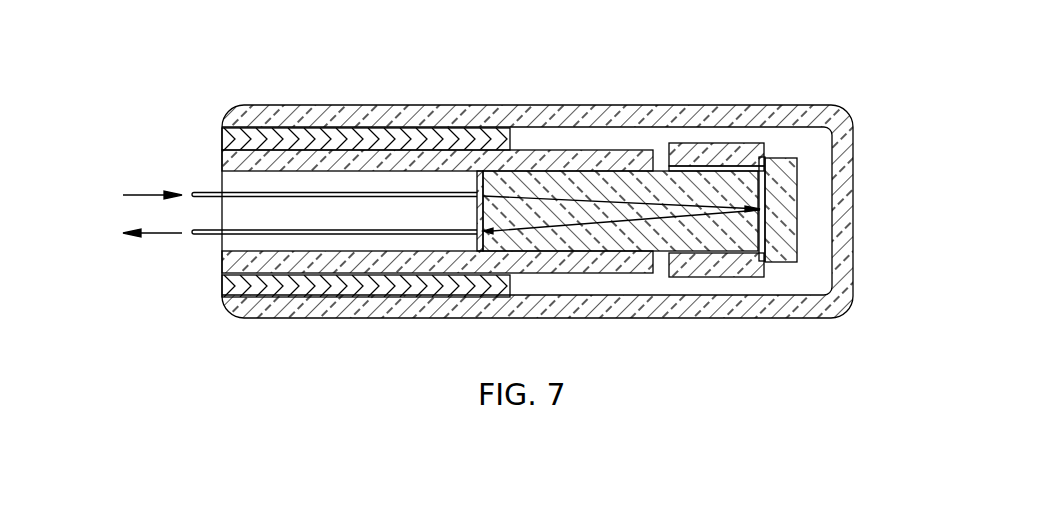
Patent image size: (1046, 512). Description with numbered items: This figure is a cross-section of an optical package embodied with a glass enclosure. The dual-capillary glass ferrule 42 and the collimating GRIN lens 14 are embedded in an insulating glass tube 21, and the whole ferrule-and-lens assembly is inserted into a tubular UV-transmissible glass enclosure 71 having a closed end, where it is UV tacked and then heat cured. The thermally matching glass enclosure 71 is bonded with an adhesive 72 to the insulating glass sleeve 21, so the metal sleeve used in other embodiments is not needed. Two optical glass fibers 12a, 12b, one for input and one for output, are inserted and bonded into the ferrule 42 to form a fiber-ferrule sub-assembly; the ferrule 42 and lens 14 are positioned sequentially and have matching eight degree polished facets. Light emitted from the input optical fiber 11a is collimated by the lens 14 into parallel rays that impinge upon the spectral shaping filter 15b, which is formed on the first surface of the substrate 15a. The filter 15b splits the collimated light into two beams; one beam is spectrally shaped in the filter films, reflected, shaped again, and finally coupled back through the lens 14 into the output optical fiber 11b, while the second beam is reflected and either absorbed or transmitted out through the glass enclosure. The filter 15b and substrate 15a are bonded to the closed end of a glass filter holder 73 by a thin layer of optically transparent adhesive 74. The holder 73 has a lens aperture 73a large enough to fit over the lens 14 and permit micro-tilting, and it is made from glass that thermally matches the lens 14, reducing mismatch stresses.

The input optical fiber 11a is at (142, 192).
The output optical fiber 11b is at (142, 237).
The input optical glass fiber 12a is at (210, 192).
The output optical glass fiber 12b is at (210, 237).
The collimating GRIN lens 14 is at (582, 245).
The substrate 15a is at (790, 183).
The spectral shaping GFF filter 15b is at (764, 157).
The insulating glass tube 21 is at (540, 150).
The dual-capillary glass ferrule 42 is at (318, 245).
The glass enclosure 71 is at (807, 104).
The adhesive 72 is at (297, 136).
The glass filter holder 73 is at (692, 150).
The lens aperture 73a is at (712, 168).
The optically transparent adhesive 74 is at (722, 256).